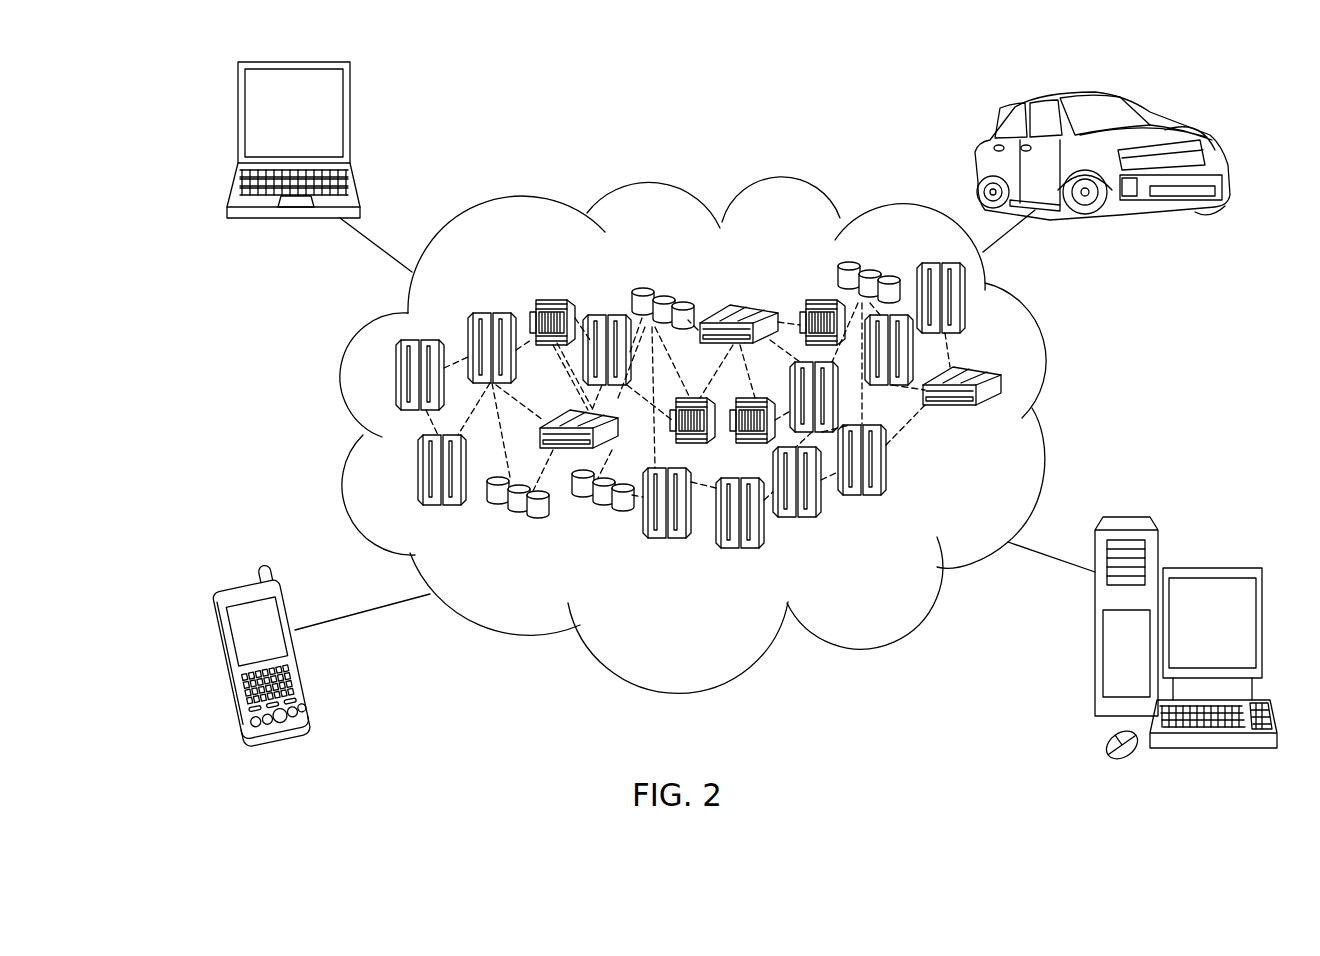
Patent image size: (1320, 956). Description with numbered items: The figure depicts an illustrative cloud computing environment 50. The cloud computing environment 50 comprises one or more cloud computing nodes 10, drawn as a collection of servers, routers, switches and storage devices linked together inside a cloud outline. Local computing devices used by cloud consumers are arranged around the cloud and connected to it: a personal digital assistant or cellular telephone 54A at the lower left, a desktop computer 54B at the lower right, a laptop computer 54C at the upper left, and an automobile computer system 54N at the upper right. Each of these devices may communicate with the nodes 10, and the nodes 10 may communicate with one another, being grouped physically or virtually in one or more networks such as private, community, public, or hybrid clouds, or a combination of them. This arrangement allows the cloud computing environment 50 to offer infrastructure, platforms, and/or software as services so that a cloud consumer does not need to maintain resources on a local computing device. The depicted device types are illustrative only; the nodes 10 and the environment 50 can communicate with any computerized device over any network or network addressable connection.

The cloud computing node 10 is at (1022, 430).
The cloud computing environment 50 is at (1042, 348).
The personal digital assistant or cellular telephone 54A is at (212, 657).
The desktop computer 54B is at (1207, 568).
The laptop computer 54C is at (237, 120).
The automobile computer system 54N is at (1148, 117).